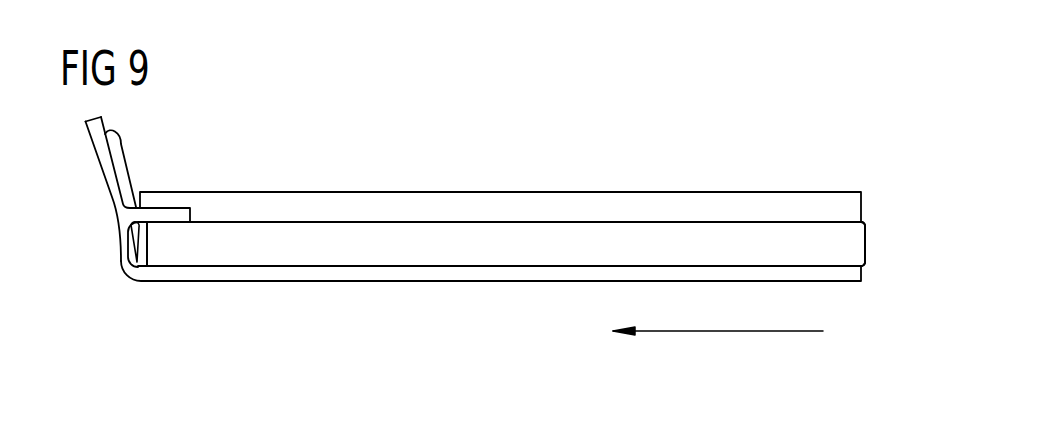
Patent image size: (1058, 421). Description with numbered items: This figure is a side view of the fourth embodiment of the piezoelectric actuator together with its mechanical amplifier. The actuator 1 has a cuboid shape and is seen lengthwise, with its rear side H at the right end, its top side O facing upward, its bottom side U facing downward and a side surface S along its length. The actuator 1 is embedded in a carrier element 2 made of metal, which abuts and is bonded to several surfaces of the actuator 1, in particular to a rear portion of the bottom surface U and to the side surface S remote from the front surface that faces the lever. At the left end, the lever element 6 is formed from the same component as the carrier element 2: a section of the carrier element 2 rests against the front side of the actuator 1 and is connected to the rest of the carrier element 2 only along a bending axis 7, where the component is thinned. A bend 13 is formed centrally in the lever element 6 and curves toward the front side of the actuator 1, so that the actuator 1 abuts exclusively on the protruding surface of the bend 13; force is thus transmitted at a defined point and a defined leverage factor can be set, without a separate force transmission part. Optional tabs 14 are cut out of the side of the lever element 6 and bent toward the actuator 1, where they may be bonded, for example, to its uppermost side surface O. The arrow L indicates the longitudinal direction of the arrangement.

The piezoelectric actuator 1 is at (473, 235).
The carrier element 2 is at (670, 203).
The lever element 6 is at (112, 208).
The bending axis 7 is at (136, 273).
The bend 13 is at (118, 155).
The tabs 14 is at (123, 249).
The top side O is at (390, 210).
The bottom side U is at (350, 283).
The side surface S is at (490, 255).
The rear side H is at (885, 242).
The longitudinal direction arrow L is at (718, 332).